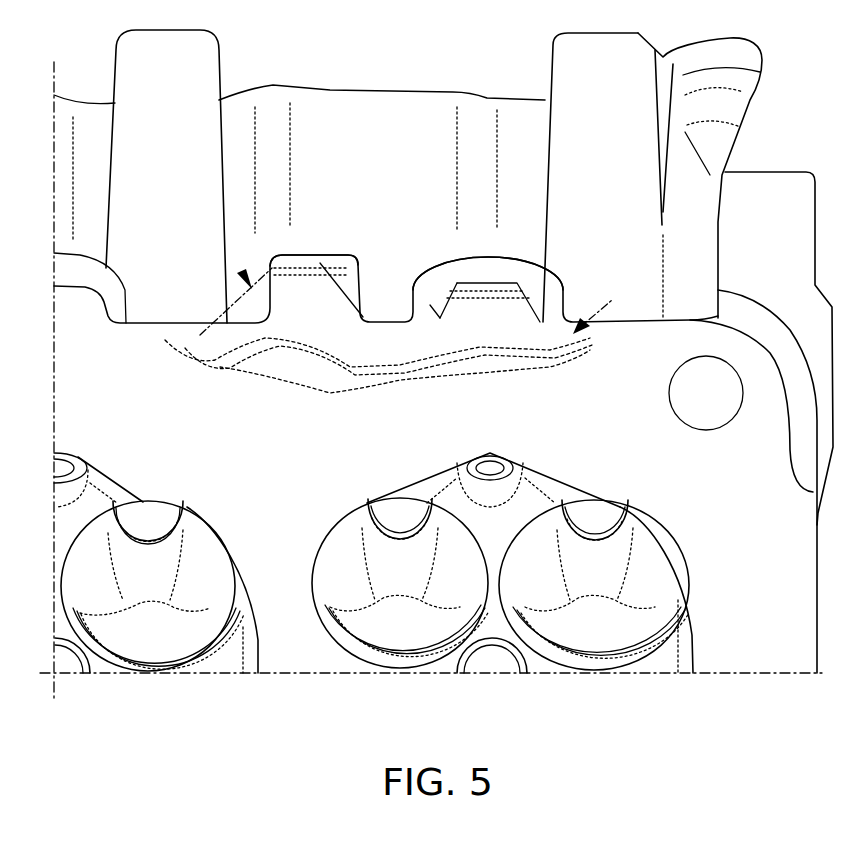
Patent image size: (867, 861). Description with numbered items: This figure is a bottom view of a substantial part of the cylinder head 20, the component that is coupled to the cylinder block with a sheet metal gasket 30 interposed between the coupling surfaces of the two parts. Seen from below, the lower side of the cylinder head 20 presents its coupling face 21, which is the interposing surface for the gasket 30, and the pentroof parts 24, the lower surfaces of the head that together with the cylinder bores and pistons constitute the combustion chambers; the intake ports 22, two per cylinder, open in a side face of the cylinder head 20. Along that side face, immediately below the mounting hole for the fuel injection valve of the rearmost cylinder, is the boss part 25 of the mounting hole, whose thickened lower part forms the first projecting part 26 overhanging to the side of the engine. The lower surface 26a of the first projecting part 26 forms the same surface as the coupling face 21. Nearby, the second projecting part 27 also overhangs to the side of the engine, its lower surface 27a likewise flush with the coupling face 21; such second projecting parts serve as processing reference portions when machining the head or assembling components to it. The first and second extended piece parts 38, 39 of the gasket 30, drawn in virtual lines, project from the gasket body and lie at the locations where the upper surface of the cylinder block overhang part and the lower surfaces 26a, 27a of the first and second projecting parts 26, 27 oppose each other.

The cylinder head 20 is at (493, 90).
The coupling face 21 is at (397, 377).
The intake port 22 is at (397, 637).
The pentroof part 24 is at (660, 653).
The boss part 25 is at (108, 283).
The first projecting part 26 is at (523, 272).
The lower surface 26a is at (485, 310).
The second projecting part 27 is at (333, 255).
The lower surface 27a is at (297, 290).
The sheet metal gasket 30 is at (582, 325).
The first extended piece part 38 is at (440, 313).
The second extended piece part 39 is at (214, 263).